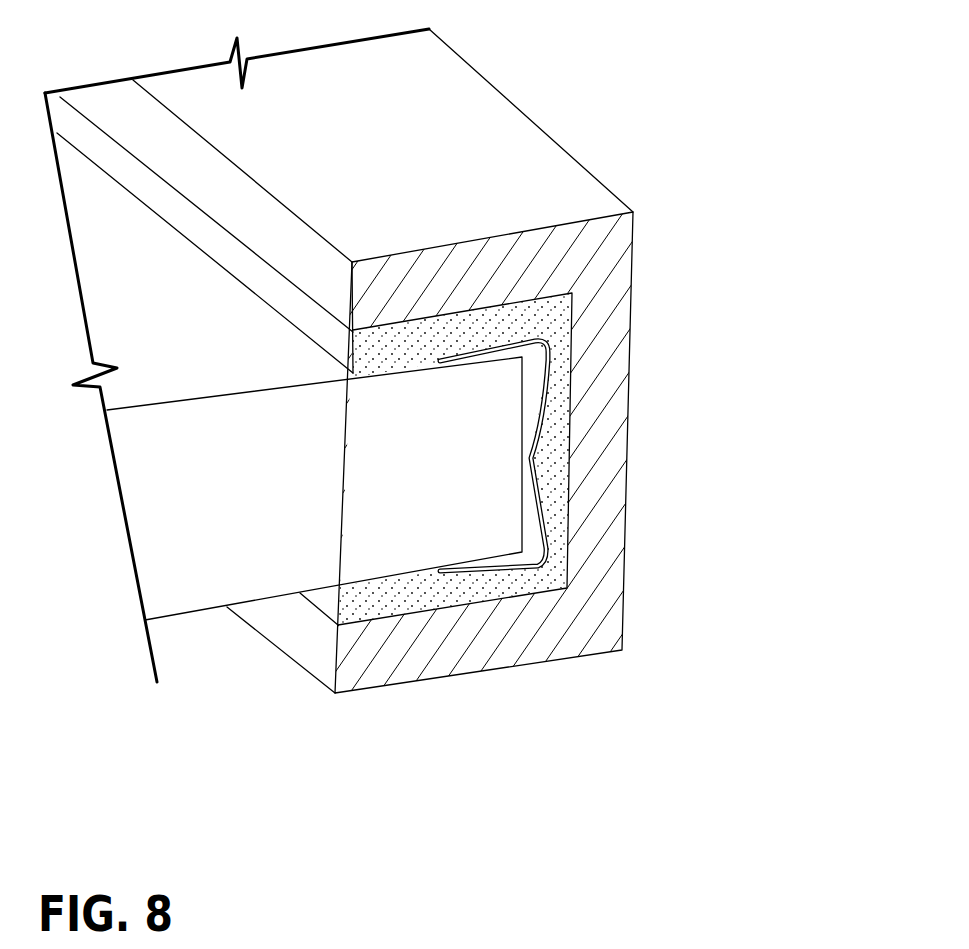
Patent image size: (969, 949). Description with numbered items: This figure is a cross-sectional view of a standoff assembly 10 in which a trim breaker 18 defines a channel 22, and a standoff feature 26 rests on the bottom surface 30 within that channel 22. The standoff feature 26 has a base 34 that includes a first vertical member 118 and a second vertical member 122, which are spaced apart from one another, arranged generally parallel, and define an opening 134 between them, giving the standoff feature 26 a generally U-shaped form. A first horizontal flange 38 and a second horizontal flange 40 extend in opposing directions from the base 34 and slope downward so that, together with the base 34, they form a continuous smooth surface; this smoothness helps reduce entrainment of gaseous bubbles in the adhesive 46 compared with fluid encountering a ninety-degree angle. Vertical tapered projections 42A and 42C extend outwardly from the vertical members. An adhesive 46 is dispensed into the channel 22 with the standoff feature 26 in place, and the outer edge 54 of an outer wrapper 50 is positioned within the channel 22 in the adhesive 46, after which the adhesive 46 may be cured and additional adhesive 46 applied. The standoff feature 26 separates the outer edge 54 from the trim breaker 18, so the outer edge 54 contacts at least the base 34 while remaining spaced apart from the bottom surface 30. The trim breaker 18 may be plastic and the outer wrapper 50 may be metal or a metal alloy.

The standoff assembly 10 is at (540, 114).
The trim breaker 18 is at (522, 642).
The channel 22 is at (568, 442).
The standoff feature 26 is at (560, 379).
The bottom surface 30 is at (550, 415).
The base 34 is at (548, 357).
The first horizontal flange 38 is at (527, 523).
The second horizontal flange 40 is at (530, 457).
The vertical tapered projection 42A is at (513, 562).
The vertical tapered projection 42C is at (505, 337).
The adhesive 46 is at (400, 592).
The outer wrapper 50 is at (192, 568).
The outer edge 54 is at (492, 542).
The first vertical member 118 is at (484, 350).
The second vertical member 122 is at (483, 563).
The opening 134 is at (453, 540).